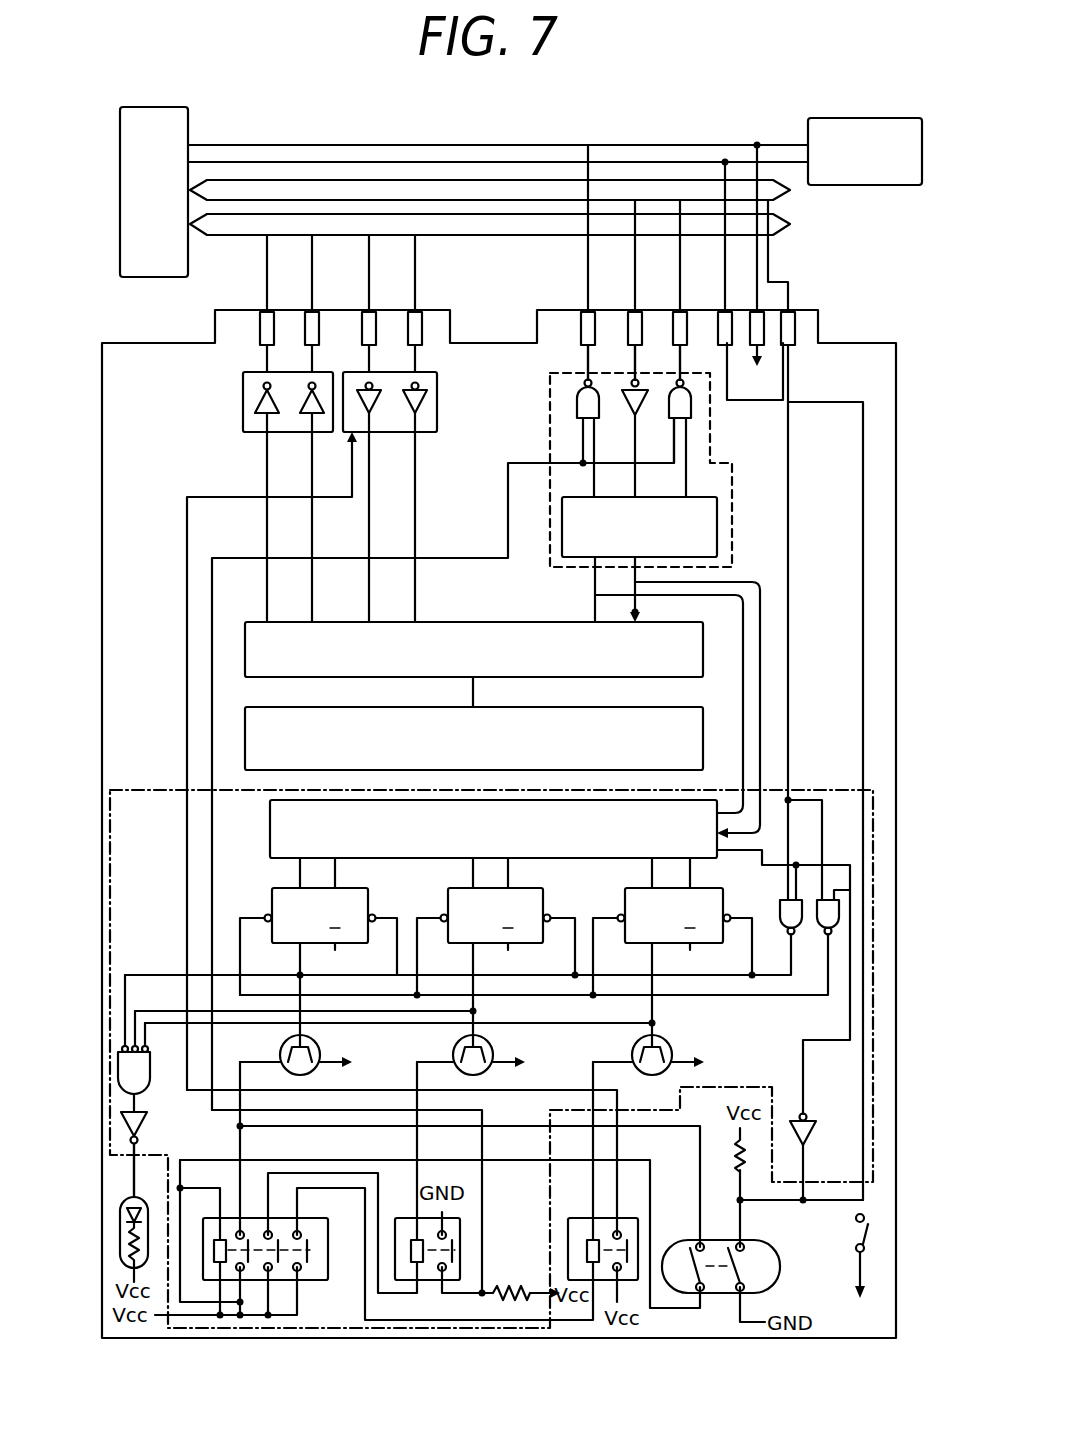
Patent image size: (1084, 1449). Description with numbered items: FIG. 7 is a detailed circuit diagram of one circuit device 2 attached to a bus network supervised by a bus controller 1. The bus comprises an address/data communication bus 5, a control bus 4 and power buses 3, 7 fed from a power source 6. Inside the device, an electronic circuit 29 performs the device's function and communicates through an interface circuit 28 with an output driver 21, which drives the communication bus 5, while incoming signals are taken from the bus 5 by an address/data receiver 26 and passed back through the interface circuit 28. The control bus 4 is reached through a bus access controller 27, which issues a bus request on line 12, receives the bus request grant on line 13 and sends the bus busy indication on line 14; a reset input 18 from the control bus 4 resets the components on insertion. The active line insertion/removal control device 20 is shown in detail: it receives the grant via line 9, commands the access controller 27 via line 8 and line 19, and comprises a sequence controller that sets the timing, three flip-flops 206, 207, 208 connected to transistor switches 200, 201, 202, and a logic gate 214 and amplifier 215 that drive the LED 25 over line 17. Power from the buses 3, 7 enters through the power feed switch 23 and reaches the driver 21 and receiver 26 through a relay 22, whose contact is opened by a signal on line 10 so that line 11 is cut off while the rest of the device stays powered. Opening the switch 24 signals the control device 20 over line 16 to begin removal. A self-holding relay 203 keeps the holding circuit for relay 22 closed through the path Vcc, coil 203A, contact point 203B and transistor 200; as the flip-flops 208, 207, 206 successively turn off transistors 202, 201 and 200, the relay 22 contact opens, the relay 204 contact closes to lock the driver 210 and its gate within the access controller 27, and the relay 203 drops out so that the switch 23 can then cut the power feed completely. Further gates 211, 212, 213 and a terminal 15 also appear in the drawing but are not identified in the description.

The bus controller 1 is at (158, 107).
The circuit device 2 is at (862, 343).
The power bus 3 is at (540, 162).
The control bus 4 is at (593, 180).
The address/data bus 5 is at (617, 214).
The power source 6 is at (884, 118).
The power bus 7 is at (462, 145).
The line 8 is at (590, 578).
The line 9 is at (632, 569).
The line 10 is at (655, 957).
The line 11 is at (220, 497).
The line 12 is at (586, 352).
The line 13 is at (640, 357).
The line 14 is at (683, 356).
The power supply terminal 15 is at (852, 1272).
The line 16 is at (838, 862).
The line 17 is at (124, 1181).
The reset input 18 is at (790, 383).
The line 19 is at (460, 558).
The control device 20 is at (833, 790).
The output driver 21 is at (243, 390).
The relay 22 is at (585, 1218).
The switch 23 is at (852, 1229).
The switch 24 is at (780, 1272).
The LED 25 is at (148, 1199).
The address/data receiver 26 is at (440, 393).
The bus access controller 27 is at (735, 500).
The interface circuit 28 is at (470, 622).
The electronic circuit 29 is at (650, 707).
The transistor switch 200 is at (313, 1048).
The transistor switch 201 is at (492, 1048).
The transistor switch 202 is at (672, 1048).
The relay 203 is at (272, 1224).
The coil 203A is at (212, 1238).
The contact point 203B is at (255, 1218).
The relay 204 is at (462, 1240).
The flip-flop 206 is at (368, 892).
The flip-flop 207 is at (543, 892).
The flip-flop 208 is at (723, 892).
The driver 210 is at (575, 408).
The inverter 211 is at (814, 1128).
The NAND gate 212 is at (814, 938).
The NAND gate 213 is at (776, 938).
The logic gate 214 is at (151, 1092).
The amplifier 215 is at (270, 838).